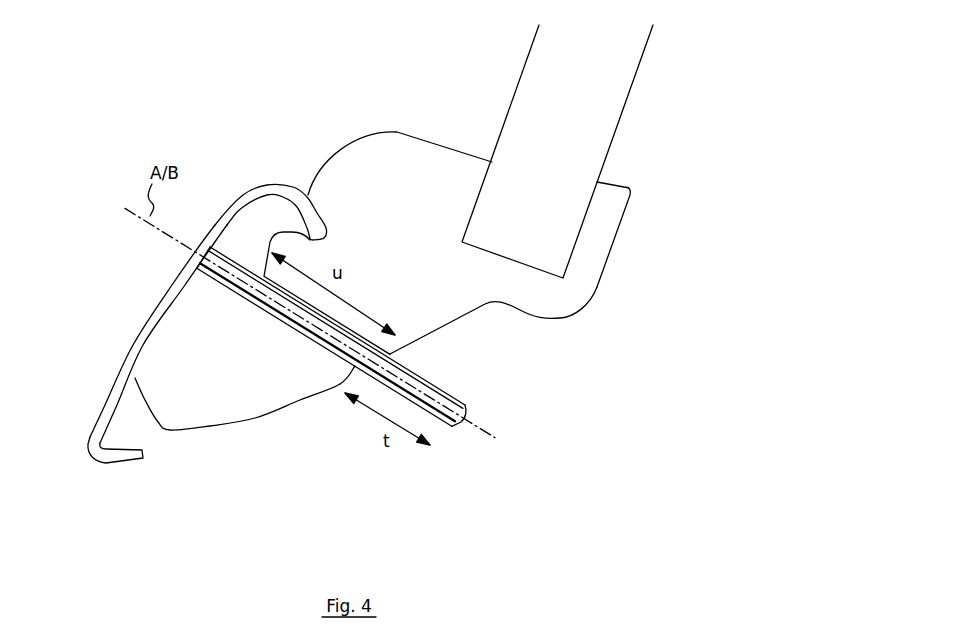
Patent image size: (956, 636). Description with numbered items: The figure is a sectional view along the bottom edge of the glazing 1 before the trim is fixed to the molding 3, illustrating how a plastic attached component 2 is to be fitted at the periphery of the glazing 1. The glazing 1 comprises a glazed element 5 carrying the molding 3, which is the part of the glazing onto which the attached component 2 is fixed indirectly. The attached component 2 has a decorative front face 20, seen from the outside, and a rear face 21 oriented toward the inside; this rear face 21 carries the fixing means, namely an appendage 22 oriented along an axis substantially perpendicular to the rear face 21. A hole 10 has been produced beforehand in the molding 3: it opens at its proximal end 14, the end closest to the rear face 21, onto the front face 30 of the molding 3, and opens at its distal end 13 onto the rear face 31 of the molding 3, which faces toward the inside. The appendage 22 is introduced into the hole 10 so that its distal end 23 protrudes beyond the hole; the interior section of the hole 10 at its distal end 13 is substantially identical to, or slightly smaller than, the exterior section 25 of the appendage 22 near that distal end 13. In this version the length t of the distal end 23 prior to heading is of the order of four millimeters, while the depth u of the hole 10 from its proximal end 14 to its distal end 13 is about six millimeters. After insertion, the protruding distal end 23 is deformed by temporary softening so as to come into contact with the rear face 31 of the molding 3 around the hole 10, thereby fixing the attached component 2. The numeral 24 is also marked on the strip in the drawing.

The glazing 1 is at (249, 64).
The attached component 2 is at (284, 186).
The molding 3 is at (205, 400).
The glazed element 5 is at (606, 120).
The hole 10 is at (300, 332).
The distal end 13 is at (353, 368).
The proximal end 14 is at (225, 286).
The front face 20 is at (118, 384).
The rear face 21 is at (141, 336).
The appendage 22 is at (236, 226).
The distal end 23 is at (449, 426).
The strip 24 is at (185, 268).
The exterior section 25 is at (388, 353).
The front face 30 is at (398, 132).
The rear face 31 is at (473, 308).